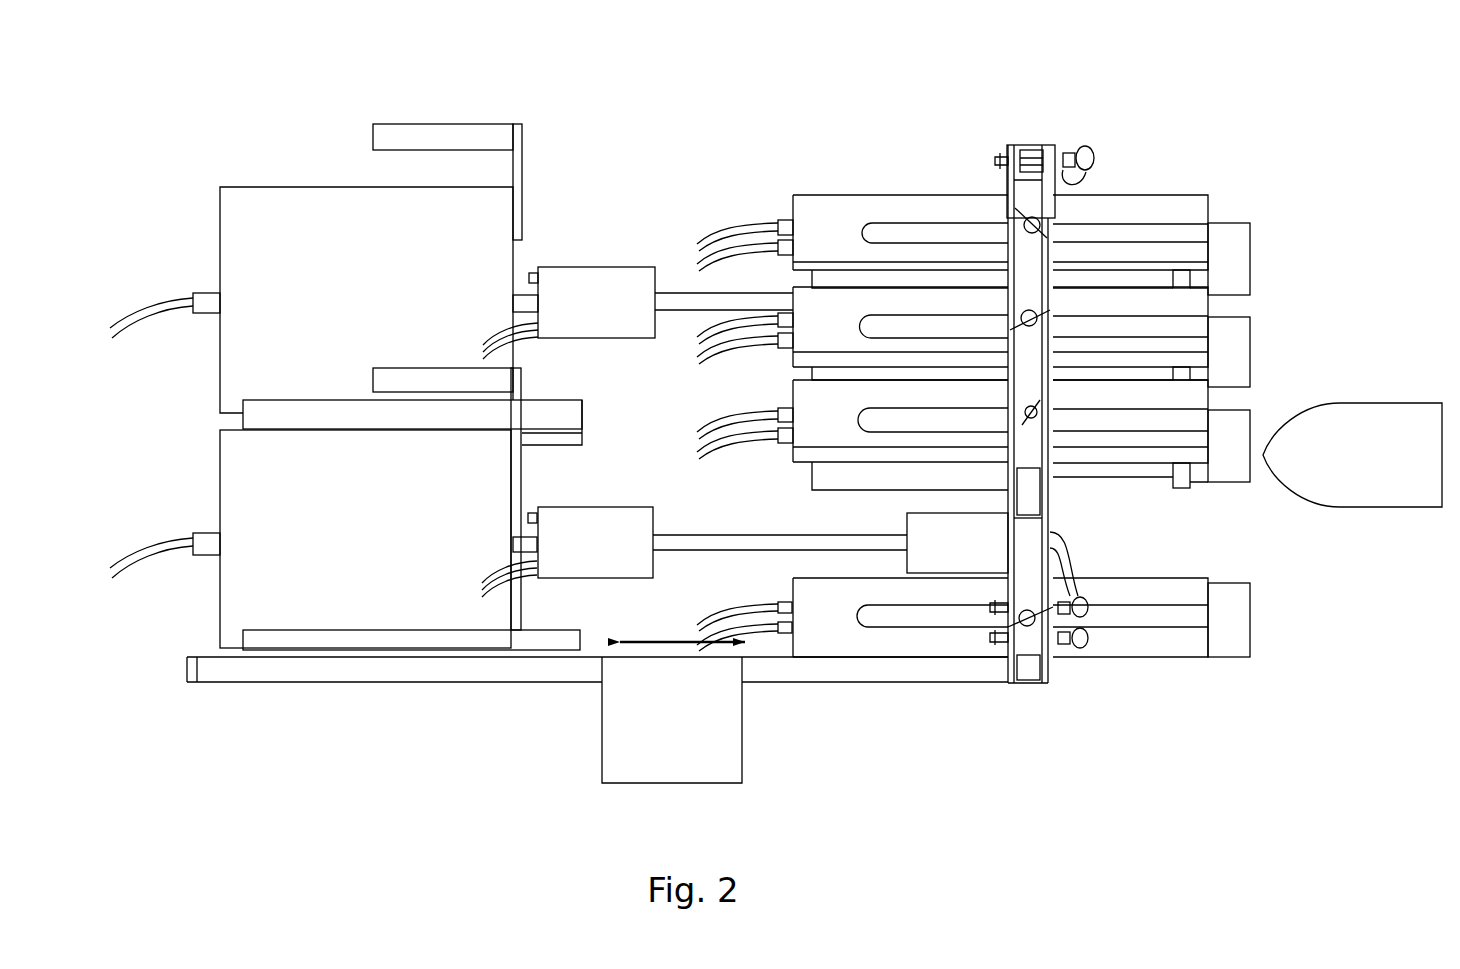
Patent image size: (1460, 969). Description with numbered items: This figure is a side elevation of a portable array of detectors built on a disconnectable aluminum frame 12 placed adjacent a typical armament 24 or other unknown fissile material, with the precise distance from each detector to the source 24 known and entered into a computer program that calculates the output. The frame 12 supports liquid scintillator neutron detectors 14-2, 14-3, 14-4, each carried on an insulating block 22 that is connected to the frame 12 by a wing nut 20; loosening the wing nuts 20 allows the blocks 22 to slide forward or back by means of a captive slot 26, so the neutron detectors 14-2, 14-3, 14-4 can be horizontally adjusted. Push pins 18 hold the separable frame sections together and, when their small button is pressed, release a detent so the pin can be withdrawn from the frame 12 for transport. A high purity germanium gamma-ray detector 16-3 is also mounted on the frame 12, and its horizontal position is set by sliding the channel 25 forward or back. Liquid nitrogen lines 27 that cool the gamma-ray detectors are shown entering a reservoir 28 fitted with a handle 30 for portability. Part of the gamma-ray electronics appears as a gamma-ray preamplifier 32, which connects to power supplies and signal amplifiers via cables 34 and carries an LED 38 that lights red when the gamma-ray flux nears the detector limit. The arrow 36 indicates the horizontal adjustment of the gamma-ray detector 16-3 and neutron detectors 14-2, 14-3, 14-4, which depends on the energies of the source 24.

The frame 12 is at (1032, 143).
The liquid scintillator neutron detector 14-2 is at (1243, 410).
The liquid scintillator neutron detector 14-3 is at (1243, 315).
The liquid scintillator neutron detector 14-4 is at (1243, 220).
The high purity germanium gamma-ray detector 16-3 is at (957, 543).
The push pin 18 is at (1086, 148).
The wing nut 20 is at (1038, 312).
The insulating block 22 is at (1197, 210).
The armament 24 is at (1335, 490).
The channel 25 is at (243, 400).
The captive slot 26 is at (965, 330).
The liquid nitrogen line 27 is at (155, 304).
The reservoir 28 is at (238, 185).
The handle 30 is at (482, 122).
The gamma-ray preamplifier 32 is at (597, 279).
The cable 34 is at (497, 320).
The arrow 36 is at (663, 636).
The LED 38 is at (533, 268).